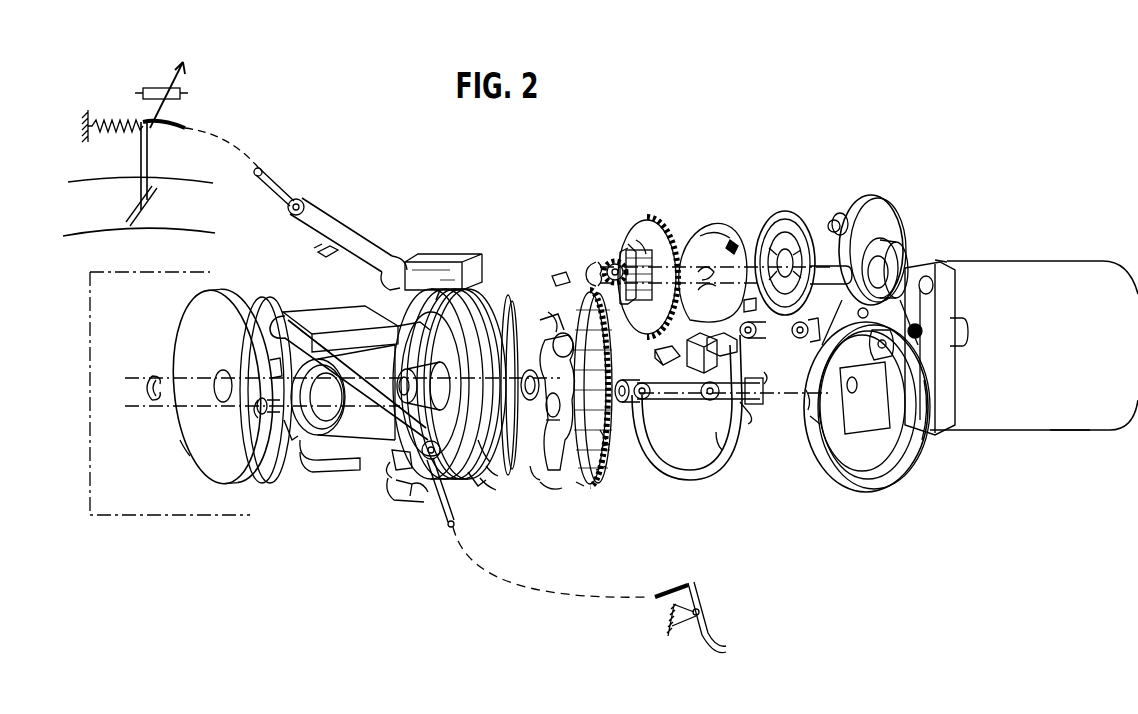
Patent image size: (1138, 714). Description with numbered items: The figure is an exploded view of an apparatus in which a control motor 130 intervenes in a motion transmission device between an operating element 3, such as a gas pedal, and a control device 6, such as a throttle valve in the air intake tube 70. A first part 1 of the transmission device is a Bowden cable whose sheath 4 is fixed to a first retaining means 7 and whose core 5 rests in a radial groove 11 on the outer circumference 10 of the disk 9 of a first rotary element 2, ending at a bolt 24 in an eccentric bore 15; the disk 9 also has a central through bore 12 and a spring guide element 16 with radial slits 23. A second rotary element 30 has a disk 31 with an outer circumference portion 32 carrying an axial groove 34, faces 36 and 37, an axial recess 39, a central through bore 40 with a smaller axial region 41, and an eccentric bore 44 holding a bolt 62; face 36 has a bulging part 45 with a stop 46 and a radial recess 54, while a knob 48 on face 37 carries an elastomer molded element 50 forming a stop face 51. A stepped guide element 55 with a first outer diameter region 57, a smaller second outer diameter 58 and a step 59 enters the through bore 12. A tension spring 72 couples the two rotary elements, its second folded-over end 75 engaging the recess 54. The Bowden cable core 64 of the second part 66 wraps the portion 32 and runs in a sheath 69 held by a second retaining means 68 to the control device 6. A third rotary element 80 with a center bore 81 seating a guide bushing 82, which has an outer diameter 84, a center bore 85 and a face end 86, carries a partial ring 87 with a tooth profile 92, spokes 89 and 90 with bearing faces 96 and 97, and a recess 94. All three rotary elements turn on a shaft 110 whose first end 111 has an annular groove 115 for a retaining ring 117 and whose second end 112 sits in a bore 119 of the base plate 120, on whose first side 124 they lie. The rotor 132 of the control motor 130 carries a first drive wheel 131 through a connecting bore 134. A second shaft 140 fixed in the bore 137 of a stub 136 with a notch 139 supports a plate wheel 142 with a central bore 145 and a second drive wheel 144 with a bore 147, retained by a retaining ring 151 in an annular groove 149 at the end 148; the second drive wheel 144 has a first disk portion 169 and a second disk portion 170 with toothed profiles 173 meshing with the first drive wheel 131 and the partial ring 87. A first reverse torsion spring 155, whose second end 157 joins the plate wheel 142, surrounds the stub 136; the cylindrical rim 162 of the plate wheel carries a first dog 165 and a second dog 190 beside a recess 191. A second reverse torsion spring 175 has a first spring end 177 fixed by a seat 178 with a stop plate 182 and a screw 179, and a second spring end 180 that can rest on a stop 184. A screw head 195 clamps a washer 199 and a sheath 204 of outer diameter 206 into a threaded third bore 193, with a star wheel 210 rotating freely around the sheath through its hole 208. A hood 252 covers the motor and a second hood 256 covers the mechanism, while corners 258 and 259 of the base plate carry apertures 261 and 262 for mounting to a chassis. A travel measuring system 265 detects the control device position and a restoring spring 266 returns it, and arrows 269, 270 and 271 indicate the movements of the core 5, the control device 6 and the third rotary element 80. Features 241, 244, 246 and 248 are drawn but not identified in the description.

The first part of the transmission device 1 is at (353, 364).
The first rotary element 2 is at (194, 480).
The operating element 3 is at (722, 638).
The Bowden cable sheath 4 is at (322, 354).
The Bowden cable core 5 is at (436, 494).
The control device 6 is at (146, 209).
The first retaining means 7 is at (334, 314).
The disk 9 is at (184, 450).
The outer circumference 10 is at (262, 460).
The radial groove 11 is at (250, 472).
The central through bore 12 is at (220, 376).
The eccentric bore 15 is at (258, 410).
The spring guide element 16 is at (290, 436).
The radial slits 23 is at (270, 368).
The bolt 24 is at (262, 416).
The second rotary element 30 is at (396, 502).
The disk 31 is at (486, 480).
The outer circumference portion 32 is at (492, 466).
The axial groove 34 is at (433, 301).
The face 36 is at (396, 316).
The face 37 is at (490, 452).
The axial recess 39 is at (394, 461).
The central through bore 40 is at (412, 372).
The axial region 41 is at (399, 386).
The eccentric bore 44 is at (444, 482).
The bulging part 45 is at (398, 486).
The stop 46 is at (416, 490).
The knob 48 is at (494, 290).
The elastomer molded element 50 is at (498, 300).
The stop face 51 is at (500, 322).
The radial recess 54 is at (386, 470).
The guide element 55 is at (506, 346).
The first outer diameter region 57 is at (508, 364).
The second outer diameter 58 is at (416, 368).
The step 59 is at (450, 434).
The bolt 62 is at (476, 482).
The Bowden cable core 64 is at (263, 170).
The second part of the transmission device 66 is at (331, 206).
The second retaining means 68 is at (440, 258).
The Bowden cable sheath 69 is at (352, 232).
The air intake tube 70 is at (180, 188).
The tension spring 72 is at (343, 392).
The second folded-over end 75 is at (330, 463).
The third rotary element 80 is at (574, 498).
The center bore 81 is at (558, 408).
The guide bushing 82 is at (551, 422).
The outer diameter 84 is at (530, 400).
The center bore 85 is at (552, 397).
The face end 86 is at (565, 349).
The partial ring 87 is at (578, 484).
The spoke 89 is at (531, 472).
The spoke 90 is at (550, 312).
The tooth profile 92 is at (602, 450).
The recess 94 is at (596, 470).
The bearing face 96 is at (546, 486).
The bearing face 97 is at (552, 316).
The shaft 110 is at (674, 420).
The first end 111 is at (621, 402).
The second end 112 is at (753, 404).
The annular groove 115 is at (604, 444).
The retaining ring 117 is at (150, 378).
The bore 119 is at (862, 398).
The base plate 120 is at (881, 501).
The first side 124 is at (905, 472).
The control motor 130 is at (1034, 345).
The first drive wheel 131 is at (622, 302).
The rotor 132 is at (944, 352).
The connecting bore 134 is at (926, 378).
The stub 136 is at (898, 268).
The bore 137 is at (886, 256).
The notch 139 is at (912, 286).
The second shaft 140 is at (825, 250).
The plate wheel 142 is at (701, 225).
The second drive wheel 144 is at (666, 212).
The central bore 145 is at (698, 259).
The bore 147 is at (612, 262).
The end 148 is at (768, 240).
The annular groove 149 is at (740, 291).
The retaining ring 151 is at (586, 266).
The first reverse torsion spring 155 is at (778, 212).
The second end 157 is at (797, 222).
The cylindrical rim 162 is at (726, 236).
The first dog 165 is at (734, 238).
The first disk portion 169 is at (643, 236).
The second disk portion 170 is at (620, 250).
The toothed profile 173 is at (628, 242).
The second reverse torsion spring 175 is at (696, 492).
The first spring end 177 is at (710, 410).
The seat 178 is at (709, 382).
The screw 179 is at (662, 402).
The second spring end 180 is at (668, 340).
The stop plate 182 is at (746, 424).
The stop 184 is at (812, 420).
The second dog 190 is at (696, 340).
The recess 191 is at (706, 292).
The third bore 193 is at (876, 311).
The head 195 is at (755, 340).
The washer 199 is at (760, 368).
The sheath 204 is at (808, 362).
The outer diameter 206 is at (790, 340).
The hole 208 is at (860, 344).
The star wheel 210 is at (808, 402).
The plate ring 241 is at (918, 448).
The plate edge 244 is at (926, 408).
The pin 246 is at (970, 331).
The hole 248 is at (923, 326).
The hood 252 is at (1066, 430).
The second hood 256 is at (178, 516).
The corner 258 is at (956, 264).
The corner 259 is at (838, 212).
The aperture 261 is at (934, 288).
The aperture 262 is at (831, 220).
The travel measuring system 265 is at (150, 88).
The restoring spring 266 is at (122, 96).
The arrow 269 is at (450, 518).
The arrow 270 is at (322, 254).
The arrow 271 is at (558, 274).